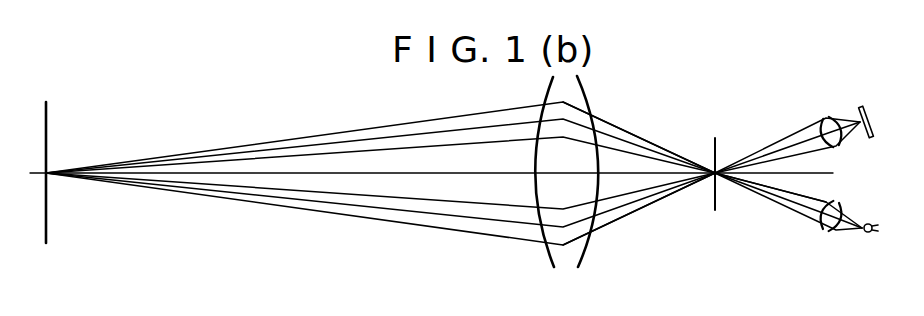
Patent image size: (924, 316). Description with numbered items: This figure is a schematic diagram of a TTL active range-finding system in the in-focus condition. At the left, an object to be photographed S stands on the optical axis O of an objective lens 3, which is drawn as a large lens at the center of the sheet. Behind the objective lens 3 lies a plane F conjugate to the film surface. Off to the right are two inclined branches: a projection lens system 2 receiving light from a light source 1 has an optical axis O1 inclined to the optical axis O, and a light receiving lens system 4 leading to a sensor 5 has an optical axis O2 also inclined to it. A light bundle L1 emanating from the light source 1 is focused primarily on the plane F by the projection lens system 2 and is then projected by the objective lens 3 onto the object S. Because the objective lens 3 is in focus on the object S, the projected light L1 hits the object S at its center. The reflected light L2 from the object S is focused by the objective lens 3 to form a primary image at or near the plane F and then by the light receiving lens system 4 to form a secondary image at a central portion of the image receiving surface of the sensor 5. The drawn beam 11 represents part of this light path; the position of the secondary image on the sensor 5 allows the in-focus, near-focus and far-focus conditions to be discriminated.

The object to be photographed S is at (47, 230).
The optical axis of objective lens O is at (305, 173).
The objective lens 3 is at (558, 258).
The light bundle L1 is at (648, 142).
The reflected light L2 is at (645, 207).
The plane conjugate to film surface F is at (712, 152).
The optical axis of light receiving lens system O2 is at (757, 158).
The optical axis of projection lens system O1 is at (775, 197).
The light receiving lens system 4 is at (825, 120).
The sensor 5 is at (875, 127).
The light beam 11 is at (818, 202).
The projection lens system 2 is at (826, 231).
The light source 1 is at (870, 236).